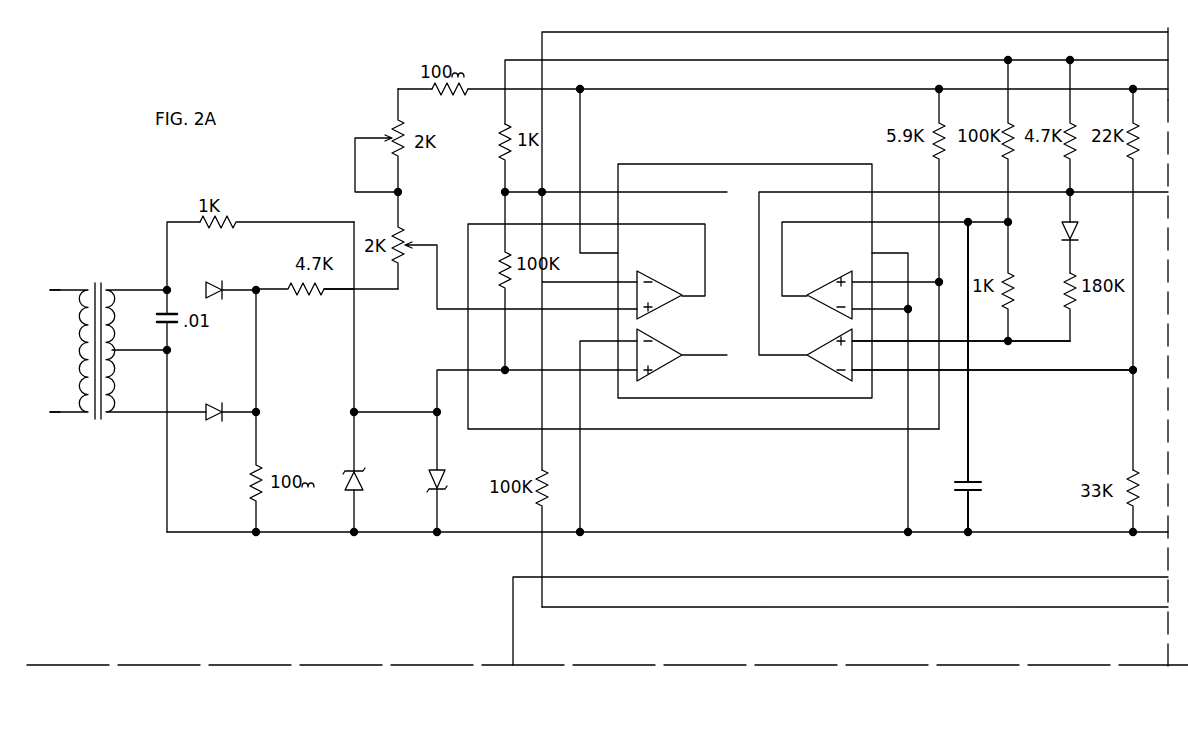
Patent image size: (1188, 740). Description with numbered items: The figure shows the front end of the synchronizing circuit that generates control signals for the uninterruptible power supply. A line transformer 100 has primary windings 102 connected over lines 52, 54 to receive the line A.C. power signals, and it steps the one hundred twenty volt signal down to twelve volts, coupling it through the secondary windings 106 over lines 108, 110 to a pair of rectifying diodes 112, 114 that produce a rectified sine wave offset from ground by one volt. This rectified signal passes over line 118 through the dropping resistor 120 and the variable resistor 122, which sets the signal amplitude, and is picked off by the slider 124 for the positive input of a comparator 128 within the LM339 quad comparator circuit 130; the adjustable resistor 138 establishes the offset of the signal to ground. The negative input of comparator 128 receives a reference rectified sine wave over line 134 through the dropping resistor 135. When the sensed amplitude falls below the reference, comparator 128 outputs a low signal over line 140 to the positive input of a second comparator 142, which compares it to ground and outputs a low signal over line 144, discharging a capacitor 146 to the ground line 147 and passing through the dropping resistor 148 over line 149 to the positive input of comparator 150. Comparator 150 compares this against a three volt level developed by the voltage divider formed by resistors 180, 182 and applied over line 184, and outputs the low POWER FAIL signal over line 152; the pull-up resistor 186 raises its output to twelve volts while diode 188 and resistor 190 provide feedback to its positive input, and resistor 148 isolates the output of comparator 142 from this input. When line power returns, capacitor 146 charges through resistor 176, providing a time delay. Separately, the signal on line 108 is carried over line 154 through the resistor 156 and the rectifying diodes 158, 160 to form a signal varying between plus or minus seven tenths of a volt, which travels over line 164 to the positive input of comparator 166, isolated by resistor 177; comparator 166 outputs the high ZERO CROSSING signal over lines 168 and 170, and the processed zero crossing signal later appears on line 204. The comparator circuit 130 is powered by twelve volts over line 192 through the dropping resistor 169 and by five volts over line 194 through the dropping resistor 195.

The line 52 is at (80, 289).
The line 54 is at (77, 414).
The line transformer 100 is at (119, 368).
The primary windings 102 is at (85, 363).
The secondary windings 106 is at (118, 320).
The line 108 is at (190, 284).
The line 110 is at (183, 412).
The rectifying diode 112 is at (218, 284).
The rectifying diode 114 is at (222, 416).
The line 118 is at (283, 284).
The dropping resistor 120 is at (316, 296).
The variable resistor 122 is at (402, 229).
The slider 124 is at (428, 250).
The comparator 128 is at (665, 290).
The quad comparator circuit 130 is at (763, 164).
The line 134 is at (543, 450).
The dropping resistor 135 is at (543, 487).
The adjustable resistor 138 is at (405, 157).
The line 140 is at (686, 222).
The comparator 142 is at (828, 289).
The line 144 is at (832, 222).
The capacitor 146 is at (962, 480).
The ground line 147 is at (780, 532).
The dropping resistor 148 is at (1012, 274).
The line 149 is at (988, 341).
The comparator 150 is at (820, 361).
The line 152 is at (905, 192).
The line 154 is at (185, 222).
The resistor 156 is at (236, 222).
The rectifying diode 158 is at (358, 492).
The rectifying diode 160 is at (445, 472).
The line 164 is at (480, 372).
The comparator 166 is at (662, 361).
The line 168 is at (592, 192).
The dropping resistor 169 is at (498, 152).
The line 170 is at (542, 43).
The resistor 176 is at (1003, 122).
The resistor 177 is at (506, 256).
The resistor 180 is at (1128, 122).
The resistor 182 is at (1128, 470).
The line 184 is at (1082, 371).
The pull-up resistor 186 is at (1066, 122).
The diode 188 is at (1077, 222).
The resistor 190 is at (1075, 272).
The line 192 is at (786, 60).
The line 194 is at (810, 89).
The dropping resistor 195 is at (448, 95).
The line 204 is at (672, 577).